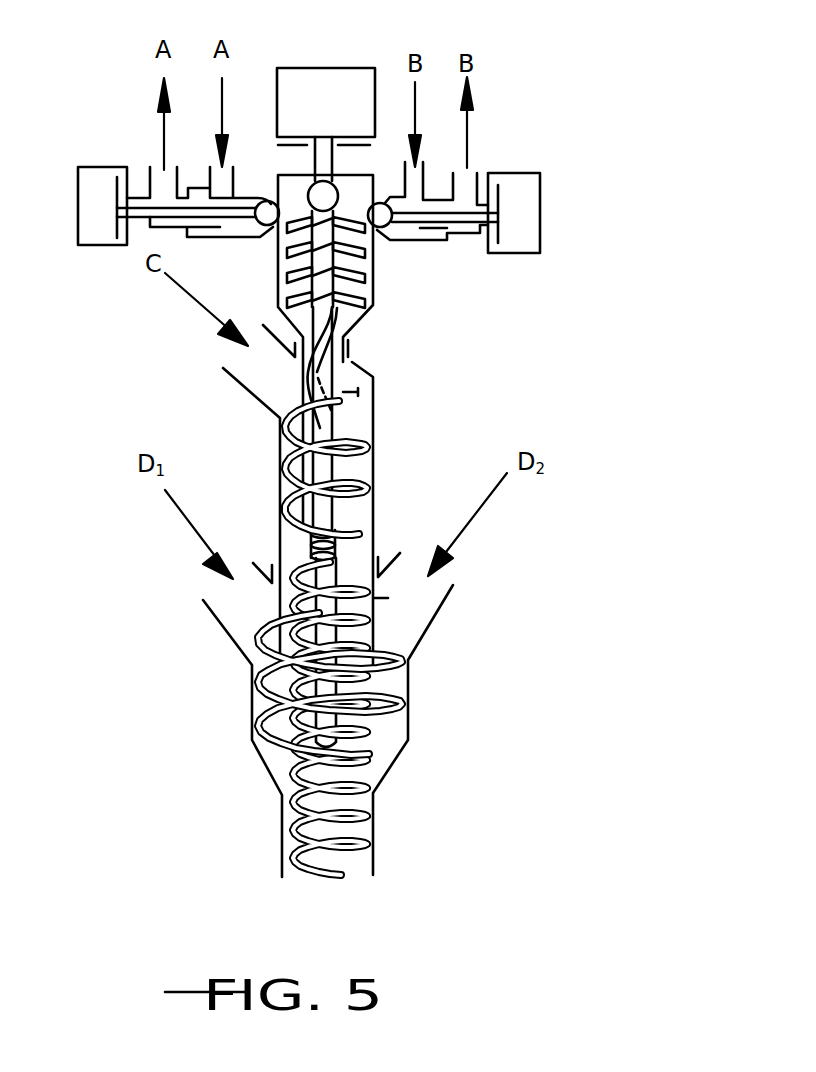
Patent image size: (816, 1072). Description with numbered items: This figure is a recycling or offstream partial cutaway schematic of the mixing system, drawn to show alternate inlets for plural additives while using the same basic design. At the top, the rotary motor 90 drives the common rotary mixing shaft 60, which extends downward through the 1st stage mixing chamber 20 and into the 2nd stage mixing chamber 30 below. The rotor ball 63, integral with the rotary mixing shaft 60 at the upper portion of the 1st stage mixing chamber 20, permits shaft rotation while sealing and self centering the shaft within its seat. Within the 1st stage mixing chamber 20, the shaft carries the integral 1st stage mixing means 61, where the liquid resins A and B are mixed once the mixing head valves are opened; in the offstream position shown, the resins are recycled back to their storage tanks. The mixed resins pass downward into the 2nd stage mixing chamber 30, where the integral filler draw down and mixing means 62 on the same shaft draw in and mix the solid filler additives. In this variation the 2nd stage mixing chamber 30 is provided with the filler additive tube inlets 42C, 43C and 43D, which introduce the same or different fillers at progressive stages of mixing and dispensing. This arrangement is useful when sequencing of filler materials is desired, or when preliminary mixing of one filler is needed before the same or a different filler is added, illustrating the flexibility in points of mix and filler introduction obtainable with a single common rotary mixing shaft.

The rotary motor 90 is at (338, 82).
The 1st stage mixing chamber 20 is at (288, 180).
The rotor ball 63 is at (323, 196).
The 1st stage mixing means 61 is at (363, 252).
The rotary mixing shaft 60 is at (323, 374).
The filler draw down and mixing means 62 is at (368, 448).
The 2nd stage mixing chamber 30 is at (367, 512).
The filler feeder tube 42C is at (262, 367).
The filler additive tube inlet 43C is at (220, 592).
The filler additive tube inlet 43D is at (438, 585).